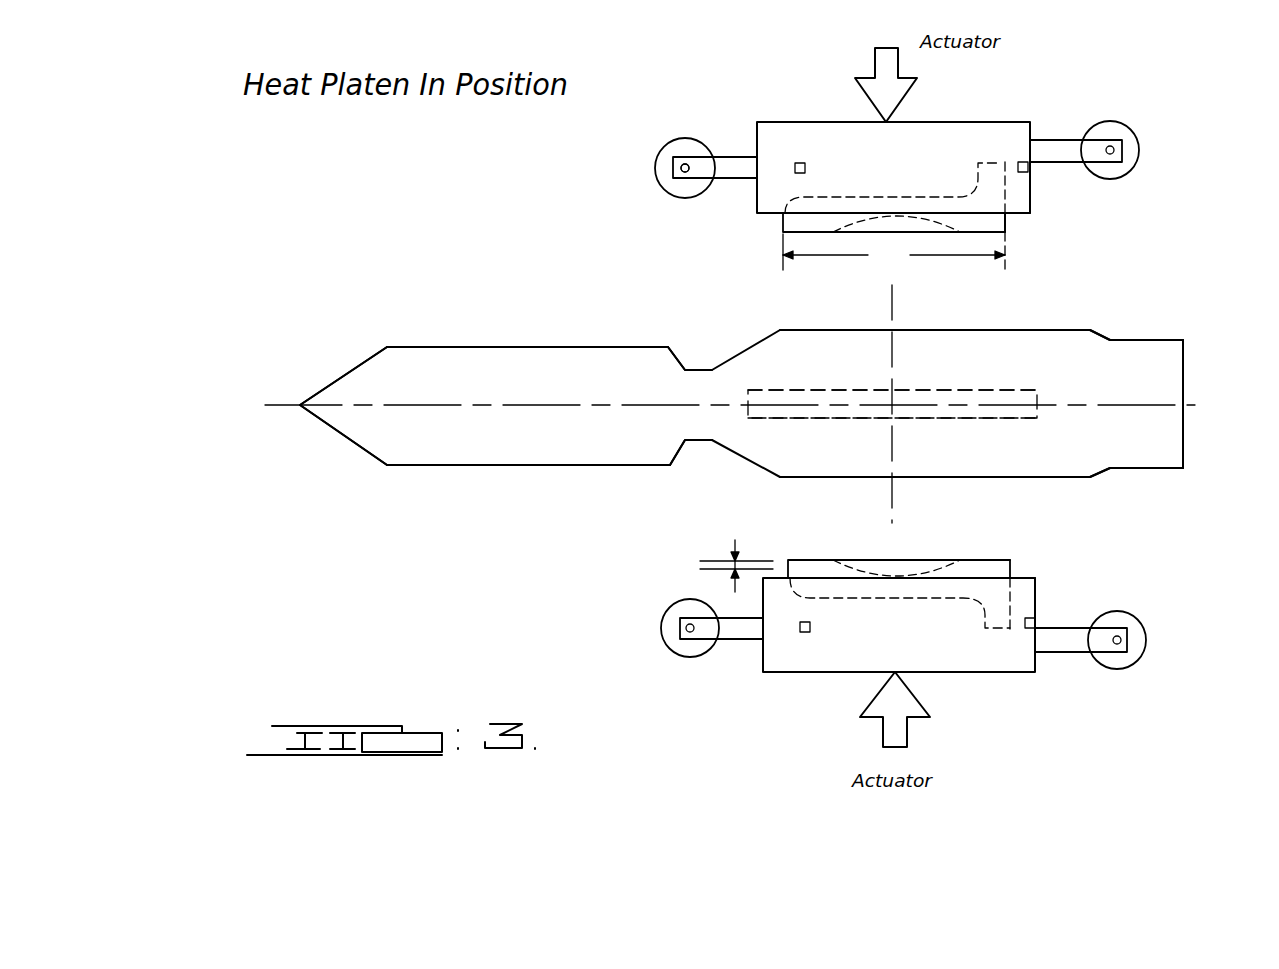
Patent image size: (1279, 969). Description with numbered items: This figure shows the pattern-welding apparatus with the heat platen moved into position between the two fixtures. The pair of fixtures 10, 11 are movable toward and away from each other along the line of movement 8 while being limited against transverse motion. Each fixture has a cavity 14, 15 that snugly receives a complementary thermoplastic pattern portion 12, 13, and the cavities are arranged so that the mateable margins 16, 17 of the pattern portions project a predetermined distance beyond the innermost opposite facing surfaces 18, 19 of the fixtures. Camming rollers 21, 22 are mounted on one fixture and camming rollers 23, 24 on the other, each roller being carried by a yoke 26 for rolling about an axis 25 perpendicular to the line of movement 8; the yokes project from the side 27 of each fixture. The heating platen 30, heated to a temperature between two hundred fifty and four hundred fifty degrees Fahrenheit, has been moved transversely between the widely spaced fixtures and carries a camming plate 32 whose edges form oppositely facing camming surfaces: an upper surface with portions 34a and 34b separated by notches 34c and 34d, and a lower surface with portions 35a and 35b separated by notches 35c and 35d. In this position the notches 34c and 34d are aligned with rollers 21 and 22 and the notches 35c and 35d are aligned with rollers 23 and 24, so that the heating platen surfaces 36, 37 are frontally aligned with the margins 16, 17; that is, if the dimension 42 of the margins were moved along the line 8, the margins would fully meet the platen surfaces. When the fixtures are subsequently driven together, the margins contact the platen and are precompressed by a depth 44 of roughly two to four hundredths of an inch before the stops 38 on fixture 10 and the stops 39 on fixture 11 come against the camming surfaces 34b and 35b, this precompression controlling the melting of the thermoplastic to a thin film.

The line of movement 8 is at (895, 292).
The fixture 10 is at (962, 130).
The fixture 11 is at (984, 657).
The pattern portion 12 is at (793, 237).
The pattern portion 13 is at (816, 557).
The cavity 14 is at (885, 198).
The cavity 15 is at (925, 598).
The mateable margin 16 is at (991, 234).
The mateable margin 17 is at (973, 559).
The innermost opposite facing surface 18 is at (1013, 214).
The innermost opposite facing surface 19 is at (1025, 577).
The camming roller 21 is at (676, 148).
The camming roller 22 is at (1125, 134).
The camming roller 23 is at (662, 616).
The camming roller 24 is at (1140, 633).
The axis 25 is at (684, 172).
The yoke 26 is at (290, 410).
The side of fixture 27 is at (1186, 367).
The heating platen 30 is at (1042, 386).
The camming plate 32 is at (562, 468).
The cam surface 34a is at (509, 347).
The cam surface 34b is at (1040, 330).
The notch 34c is at (681, 362).
The notch 34d is at (1105, 335).
The cam surface 35a is at (450, 467).
The cam surface 35b is at (991, 479).
The notch 35c is at (680, 453).
The notch 35d is at (1106, 478).
The heating platen surface 36 is at (960, 390).
The heating platen surface 37 is at (935, 419).
The stop 38 is at (800, 174).
The stop 39 is at (810, 621).
The dimension of the margins 42 is at (894, 216).
The compression 44 is at (735, 545).